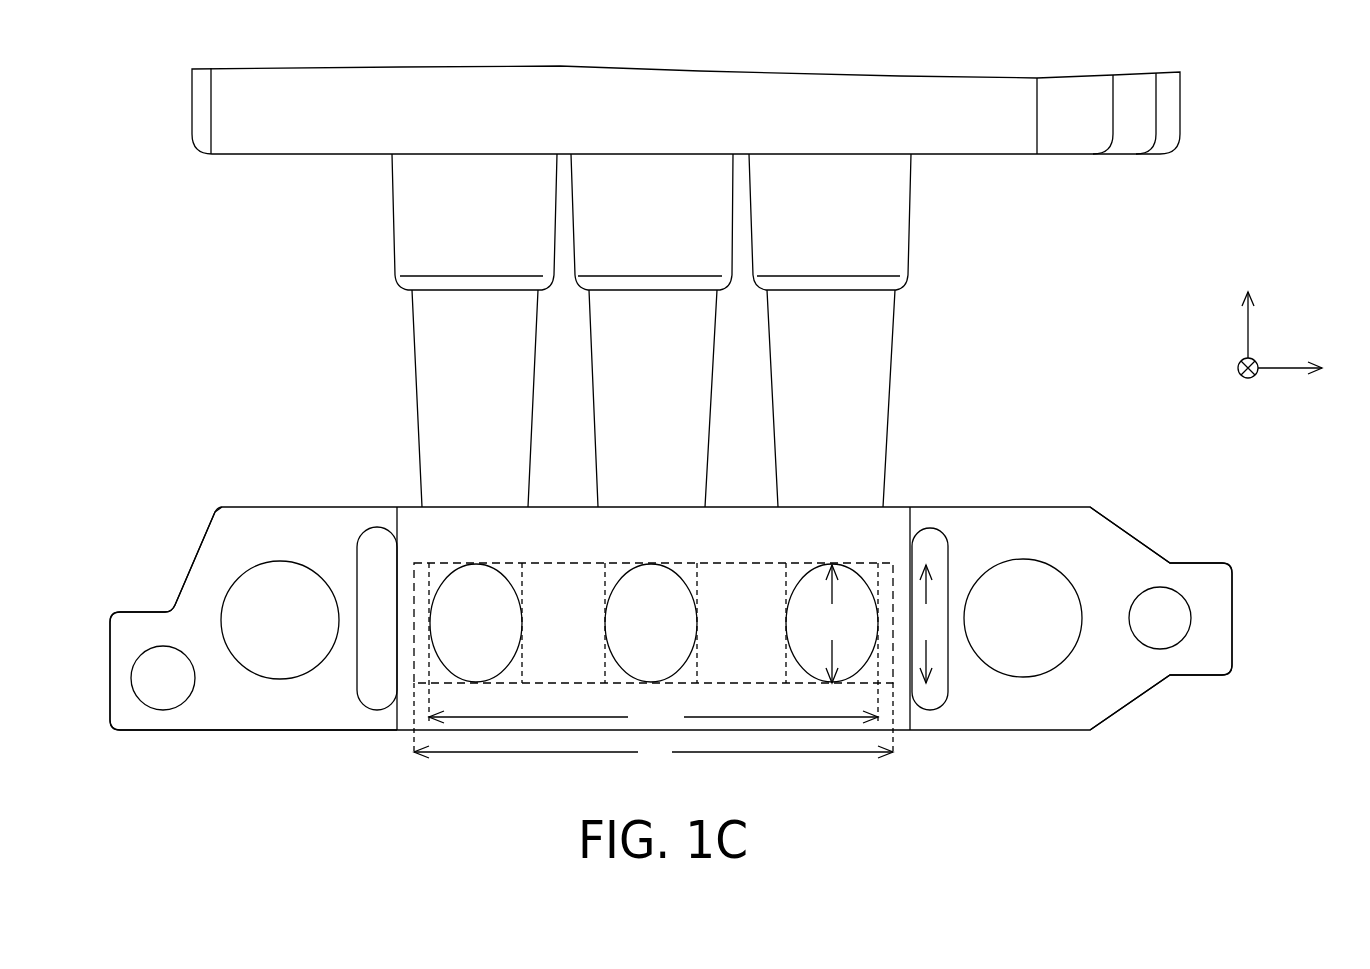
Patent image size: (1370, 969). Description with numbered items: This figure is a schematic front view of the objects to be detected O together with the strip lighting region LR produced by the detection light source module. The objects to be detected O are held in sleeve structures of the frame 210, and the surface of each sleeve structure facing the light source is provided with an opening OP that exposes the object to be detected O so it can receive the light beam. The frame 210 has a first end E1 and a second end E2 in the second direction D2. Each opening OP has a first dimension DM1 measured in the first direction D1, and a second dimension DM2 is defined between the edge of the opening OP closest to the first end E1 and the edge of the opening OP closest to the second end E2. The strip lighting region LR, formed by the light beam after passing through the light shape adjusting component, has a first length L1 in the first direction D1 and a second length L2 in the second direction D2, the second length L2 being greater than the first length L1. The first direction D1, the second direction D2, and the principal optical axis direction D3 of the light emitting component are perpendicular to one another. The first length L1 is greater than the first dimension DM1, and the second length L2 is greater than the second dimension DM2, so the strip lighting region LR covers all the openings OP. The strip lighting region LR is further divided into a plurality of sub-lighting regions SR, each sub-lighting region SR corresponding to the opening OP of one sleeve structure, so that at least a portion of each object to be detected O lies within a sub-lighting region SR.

The object to be detected O is at (872, 380).
The frame 210 is at (1046, 538).
The first end E1 is at (1152, 533).
The second end E2 is at (174, 519).
The strip lighting region LR is at (413, 649).
The sub-lighting region SR is at (428, 582).
The opening OP is at (463, 598).
The first dimension DM1 is at (829, 624).
The second dimension DM2 is at (653, 719).
The first length L1 is at (927, 624).
The second length L2 is at (653, 752).
The first direction D1 is at (1249, 310).
The second direction D2 is at (1306, 369).
The principal optical axis direction D3 is at (1239, 388).